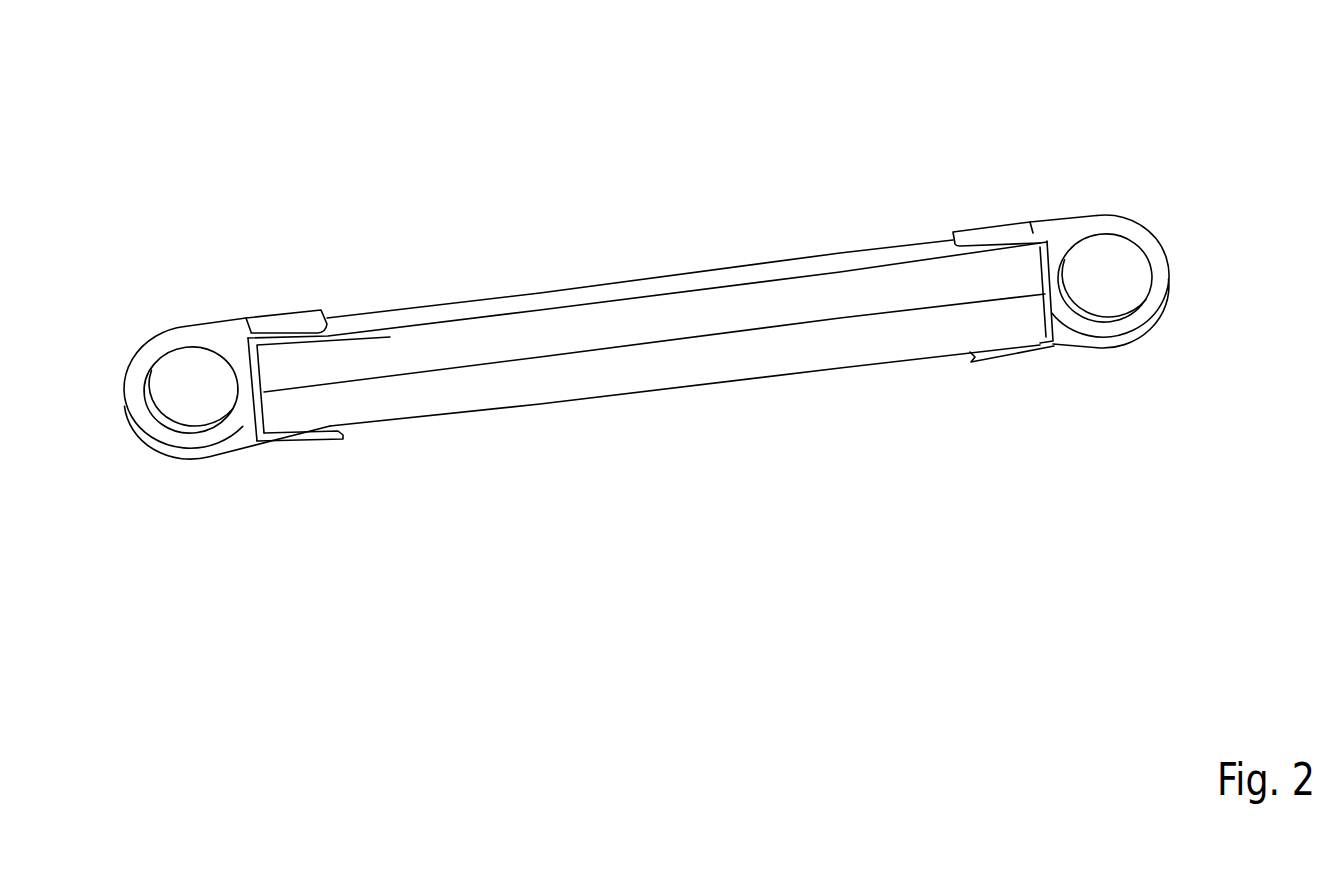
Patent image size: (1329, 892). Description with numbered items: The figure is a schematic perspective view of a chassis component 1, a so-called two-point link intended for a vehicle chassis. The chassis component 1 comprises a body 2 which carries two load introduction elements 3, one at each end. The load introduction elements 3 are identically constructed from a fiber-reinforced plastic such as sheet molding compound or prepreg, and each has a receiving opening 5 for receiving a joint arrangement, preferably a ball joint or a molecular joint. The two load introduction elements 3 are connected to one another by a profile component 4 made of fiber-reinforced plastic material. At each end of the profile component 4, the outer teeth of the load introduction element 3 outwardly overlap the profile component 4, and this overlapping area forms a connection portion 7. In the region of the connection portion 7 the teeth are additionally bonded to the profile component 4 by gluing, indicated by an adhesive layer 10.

The chassis component 1 is at (231, 147).
The body 2 is at (616, 207).
The load introduction element 3 is at (173, 304).
The profile component 4 is at (552, 368).
The receiving opening 5 is at (202, 407).
The connection portion 7 is at (324, 287).
The adhesive layer 10 is at (258, 402).